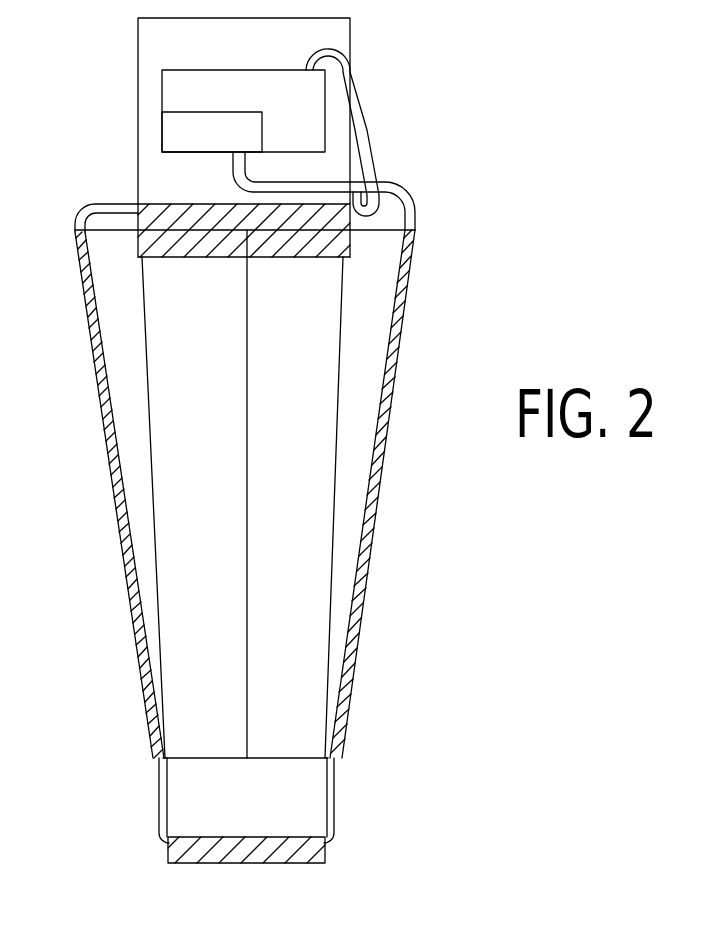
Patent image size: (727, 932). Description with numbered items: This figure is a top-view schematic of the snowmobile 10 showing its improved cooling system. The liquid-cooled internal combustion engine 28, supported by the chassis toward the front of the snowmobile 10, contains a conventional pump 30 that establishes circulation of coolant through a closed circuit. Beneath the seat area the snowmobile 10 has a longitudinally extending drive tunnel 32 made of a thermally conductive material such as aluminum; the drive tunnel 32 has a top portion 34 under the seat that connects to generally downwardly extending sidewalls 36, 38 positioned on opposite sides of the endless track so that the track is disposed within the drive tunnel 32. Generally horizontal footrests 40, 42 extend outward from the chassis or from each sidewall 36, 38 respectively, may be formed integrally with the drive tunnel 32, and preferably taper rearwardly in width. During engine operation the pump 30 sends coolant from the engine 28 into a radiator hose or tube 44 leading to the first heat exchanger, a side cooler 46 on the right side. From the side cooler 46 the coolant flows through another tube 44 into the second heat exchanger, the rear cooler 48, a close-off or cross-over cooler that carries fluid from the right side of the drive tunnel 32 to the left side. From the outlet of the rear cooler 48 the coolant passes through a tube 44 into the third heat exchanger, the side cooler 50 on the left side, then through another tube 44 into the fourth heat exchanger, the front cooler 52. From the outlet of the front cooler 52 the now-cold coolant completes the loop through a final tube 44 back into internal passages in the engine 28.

The snowmobile 10 is at (430, 47).
The internal combustion engine 28 is at (163, 78).
The pump 30 is at (163, 128).
The drive tunnel 32 is at (300, 508).
The top portion 34 is at (310, 400).
The sidewall 36 is at (148, 380).
The sidewall 38 is at (346, 358).
The footrest 40 is at (112, 318).
The footrest 42 is at (384, 275).
The radiator hose or tube 44 is at (367, 121).
The side cooler 46 is at (375, 468).
The rear cooler 48 is at (288, 782).
The side cooler 50 is at (126, 540).
The front cooler 52 is at (185, 215).